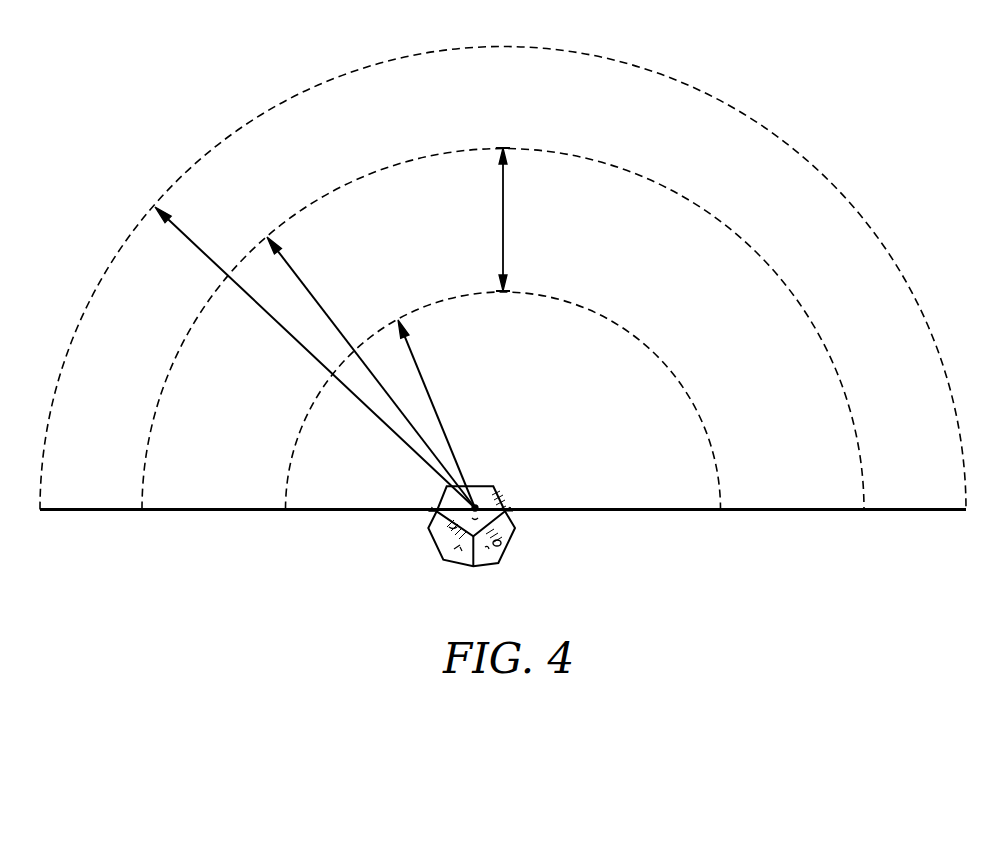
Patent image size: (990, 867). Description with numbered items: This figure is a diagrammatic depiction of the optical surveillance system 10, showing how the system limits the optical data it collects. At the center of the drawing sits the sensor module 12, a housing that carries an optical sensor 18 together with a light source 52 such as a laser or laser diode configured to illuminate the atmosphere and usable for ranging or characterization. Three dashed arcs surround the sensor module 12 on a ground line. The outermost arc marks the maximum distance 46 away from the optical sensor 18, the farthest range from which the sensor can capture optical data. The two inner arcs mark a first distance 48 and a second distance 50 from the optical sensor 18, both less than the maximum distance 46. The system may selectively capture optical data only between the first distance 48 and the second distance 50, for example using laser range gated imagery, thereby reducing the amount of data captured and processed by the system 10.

The laser level system 10 is at (366, 550).
The sensor module 12 is at (424, 565).
The optical sensor 18 is at (511, 545).
The maximum distance 46 is at (208, 260).
The first distance 48 is at (435, 403).
The second distance 50 is at (300, 280).
The light source 52 is at (499, 556).